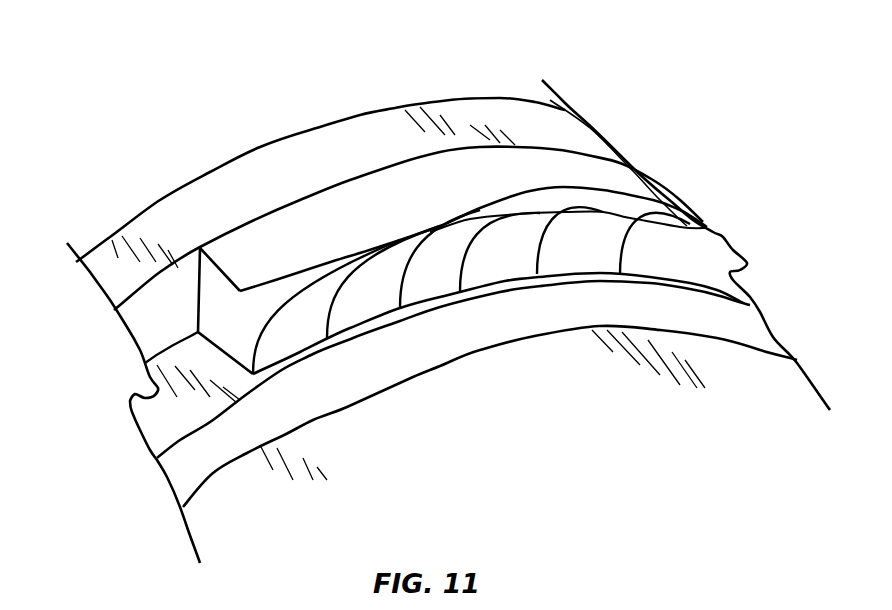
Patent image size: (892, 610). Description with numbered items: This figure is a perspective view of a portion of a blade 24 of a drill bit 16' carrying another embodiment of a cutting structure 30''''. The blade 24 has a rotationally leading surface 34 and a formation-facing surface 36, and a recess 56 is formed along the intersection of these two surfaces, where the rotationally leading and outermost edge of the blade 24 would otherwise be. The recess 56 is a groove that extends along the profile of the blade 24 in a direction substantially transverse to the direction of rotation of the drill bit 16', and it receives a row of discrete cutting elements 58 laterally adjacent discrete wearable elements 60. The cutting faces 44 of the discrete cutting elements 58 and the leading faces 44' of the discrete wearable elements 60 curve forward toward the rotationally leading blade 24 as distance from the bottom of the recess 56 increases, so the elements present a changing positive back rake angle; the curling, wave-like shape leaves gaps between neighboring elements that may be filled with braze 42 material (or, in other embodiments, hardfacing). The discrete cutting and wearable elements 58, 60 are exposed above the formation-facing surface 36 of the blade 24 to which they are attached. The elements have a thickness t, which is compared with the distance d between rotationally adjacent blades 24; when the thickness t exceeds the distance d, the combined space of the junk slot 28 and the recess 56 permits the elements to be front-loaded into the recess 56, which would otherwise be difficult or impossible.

The drill bit 16' is at (72, 102).
The cutting structure 30'''' is at (389, 159).
The discrete cutting element 58 is at (323, 258).
The discrete wearable element 60 is at (462, 215).
The formation-facing surface 36 is at (195, 229).
The blade 24 is at (113, 272).
The recess 56 is at (182, 360).
The junk slot 28 is at (187, 473).
The rotationally leading surface 34 is at (241, 451).
The cutting face 44 is at (432, 290).
The leading face 44' is at (546, 258).
The braze 42 is at (718, 300).
The thickness t is at (255, 370).
The distance d is at (773, 300).